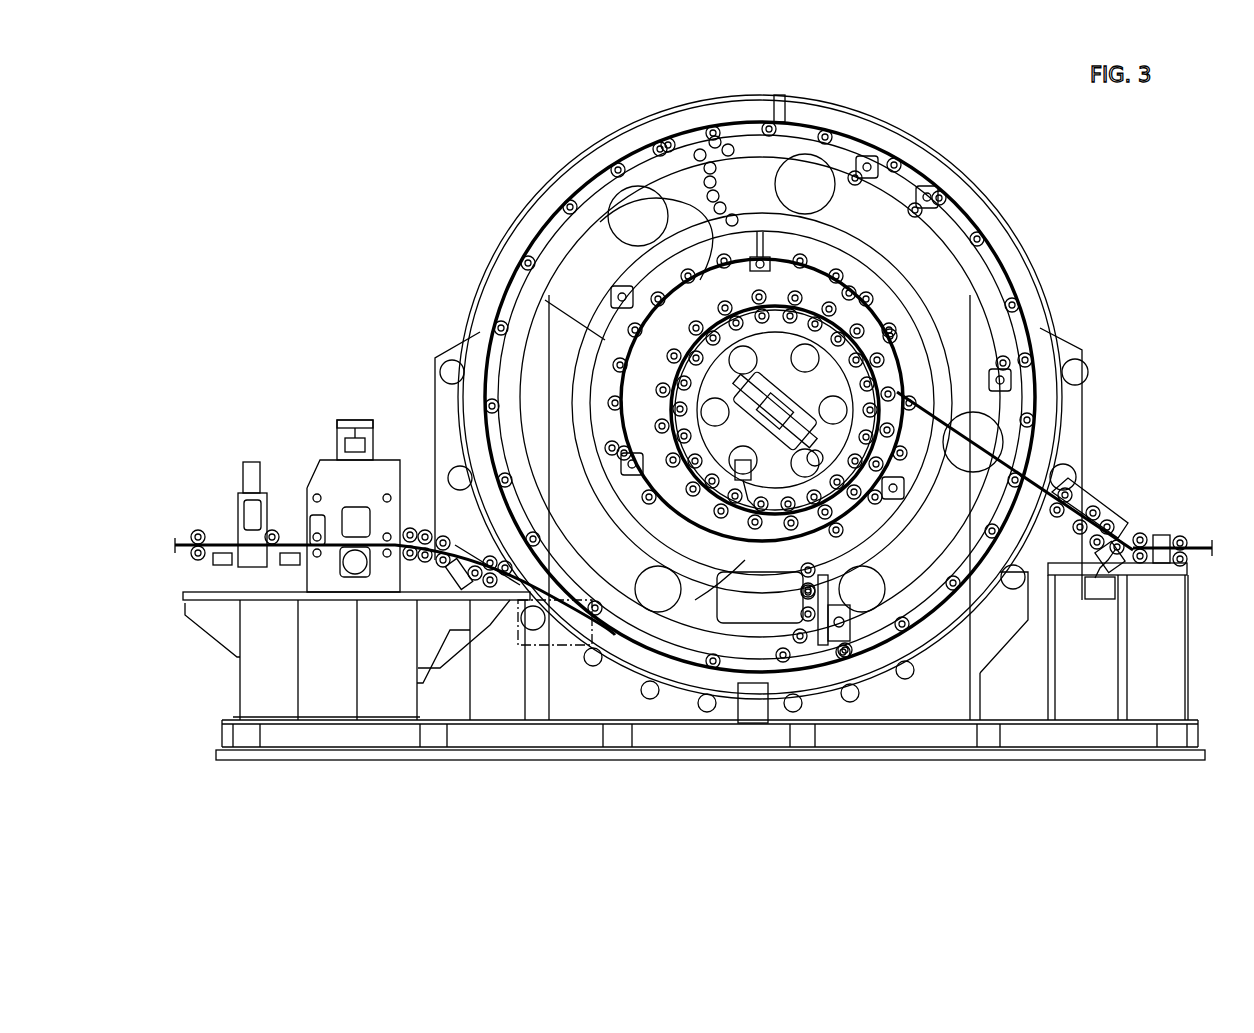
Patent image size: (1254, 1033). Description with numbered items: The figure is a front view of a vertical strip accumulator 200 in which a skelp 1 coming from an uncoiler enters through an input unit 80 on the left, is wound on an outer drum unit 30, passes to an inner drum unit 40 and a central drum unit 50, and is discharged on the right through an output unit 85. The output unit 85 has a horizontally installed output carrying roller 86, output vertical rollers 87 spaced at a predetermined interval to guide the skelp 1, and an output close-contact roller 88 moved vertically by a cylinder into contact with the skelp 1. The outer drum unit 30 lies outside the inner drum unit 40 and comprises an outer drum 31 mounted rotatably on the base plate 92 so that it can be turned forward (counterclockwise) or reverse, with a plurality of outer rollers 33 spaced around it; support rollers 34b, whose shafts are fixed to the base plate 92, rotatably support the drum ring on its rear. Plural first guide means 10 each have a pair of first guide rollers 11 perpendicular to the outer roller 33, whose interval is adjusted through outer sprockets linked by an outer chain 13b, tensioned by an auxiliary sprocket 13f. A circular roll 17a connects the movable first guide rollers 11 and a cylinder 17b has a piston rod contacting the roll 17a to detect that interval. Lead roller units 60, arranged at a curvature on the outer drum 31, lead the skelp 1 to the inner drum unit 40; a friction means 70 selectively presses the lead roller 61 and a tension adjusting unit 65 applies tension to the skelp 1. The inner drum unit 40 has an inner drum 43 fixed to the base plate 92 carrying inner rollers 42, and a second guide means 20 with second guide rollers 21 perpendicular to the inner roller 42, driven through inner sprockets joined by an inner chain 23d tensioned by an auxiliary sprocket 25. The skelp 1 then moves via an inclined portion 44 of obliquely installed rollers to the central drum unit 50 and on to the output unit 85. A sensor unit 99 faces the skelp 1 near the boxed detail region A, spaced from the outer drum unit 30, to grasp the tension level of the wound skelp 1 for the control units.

The skelp 1 is at (943, 415).
The first guide means 10 is at (753, 388).
The first guide rollers 11 is at (780, 95).
The auxiliary sprocket 13f is at (870, 160).
The outer chain 13b is at (913, 170).
The circular roll 17a is at (690, 700).
The cylinder 17b is at (752, 723).
The second guide means 20 is at (725, 400).
The second guide rollers 21 is at (637, 295).
The inner chain 23d is at (838, 386).
The auxiliary sprocket 25 is at (622, 462).
The outer drum unit 30 is at (741, 417).
The outer drum 31 is at (590, 237).
The outer roller 33 is at (520, 260).
The support rollers 34b is at (890, 500).
The inner drum unit 40 is at (762, 398).
The inner rollers 42 is at (852, 283).
The inner drum 43 is at (885, 328).
The inclined portion 44 is at (768, 260).
The central drum unit 50 is at (1010, 362).
The lead roller unit 60 is at (775, 635).
The lead roller 61 is at (800, 603).
The tension adjusting unit 65 is at (724, 545).
The friction means 70 is at (838, 605).
The input unit 80 is at (356, 550).
The output unit 85 is at (1118, 581).
The output carrying roller 86 is at (1188, 542).
The output vertical rollers 87 is at (1088, 500).
The output close-contact roller 88 is at (1110, 578).
The base plate 92 is at (978, 684).
The sensor unit 99 is at (548, 648).
The detail region A is at (588, 645).
The vertical strip accumulator 200 is at (710, 781).